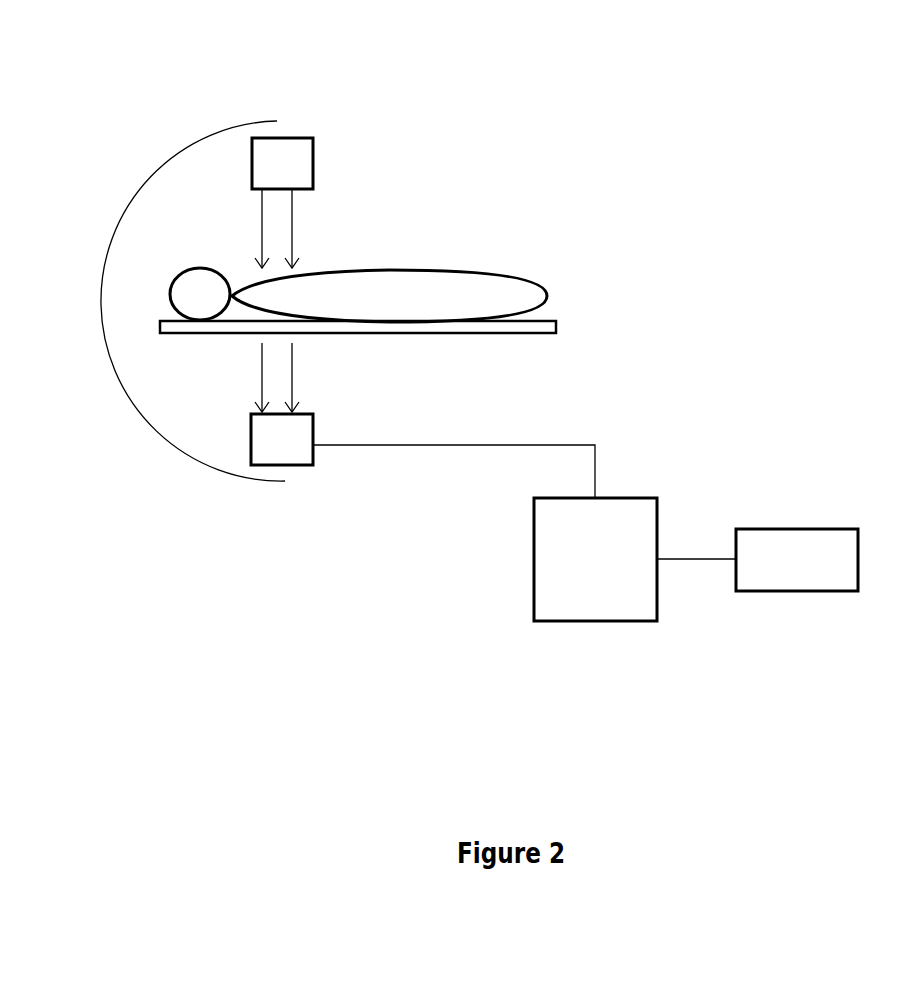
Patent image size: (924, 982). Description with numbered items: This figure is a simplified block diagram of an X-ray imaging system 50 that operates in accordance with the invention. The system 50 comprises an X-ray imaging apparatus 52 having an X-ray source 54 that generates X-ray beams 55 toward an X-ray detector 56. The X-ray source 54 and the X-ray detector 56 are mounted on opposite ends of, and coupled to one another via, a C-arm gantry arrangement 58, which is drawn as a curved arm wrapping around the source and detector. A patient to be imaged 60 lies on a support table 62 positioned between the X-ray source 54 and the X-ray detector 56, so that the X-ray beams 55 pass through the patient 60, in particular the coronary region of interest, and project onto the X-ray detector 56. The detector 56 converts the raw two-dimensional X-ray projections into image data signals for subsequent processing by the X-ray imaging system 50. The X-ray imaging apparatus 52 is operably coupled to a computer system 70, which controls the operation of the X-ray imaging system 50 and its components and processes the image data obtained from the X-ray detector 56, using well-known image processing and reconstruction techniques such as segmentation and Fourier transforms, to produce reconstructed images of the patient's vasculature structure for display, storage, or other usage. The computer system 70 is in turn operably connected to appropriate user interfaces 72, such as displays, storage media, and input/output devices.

The X-ray imaging system 50 is at (768, 192).
The X-ray imaging apparatus 52 is at (385, 137).
The X-ray source 54 is at (291, 168).
The X-ray beams 55 is at (313, 200).
The X-ray detector 56 is at (293, 447).
The C-arm gantry arrangement 58 is at (140, 187).
The patient to be imaged 60 is at (443, 293).
The support table 62 is at (500, 335).
The computer system 70 is at (485, 533).
The user interfaces 72 is at (757, 560).